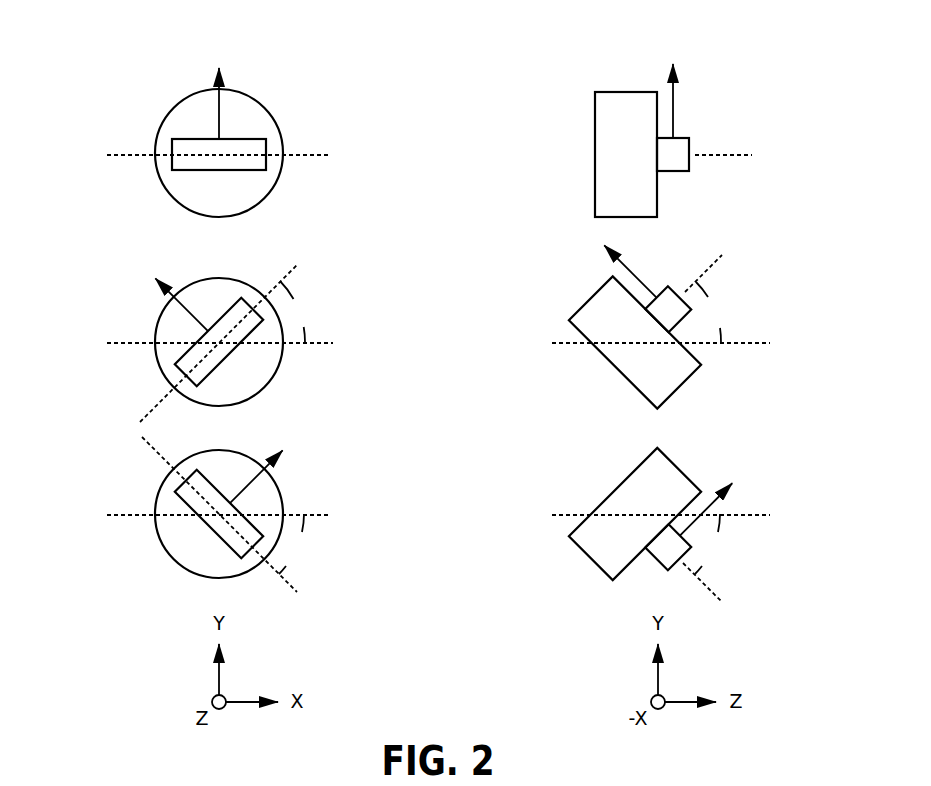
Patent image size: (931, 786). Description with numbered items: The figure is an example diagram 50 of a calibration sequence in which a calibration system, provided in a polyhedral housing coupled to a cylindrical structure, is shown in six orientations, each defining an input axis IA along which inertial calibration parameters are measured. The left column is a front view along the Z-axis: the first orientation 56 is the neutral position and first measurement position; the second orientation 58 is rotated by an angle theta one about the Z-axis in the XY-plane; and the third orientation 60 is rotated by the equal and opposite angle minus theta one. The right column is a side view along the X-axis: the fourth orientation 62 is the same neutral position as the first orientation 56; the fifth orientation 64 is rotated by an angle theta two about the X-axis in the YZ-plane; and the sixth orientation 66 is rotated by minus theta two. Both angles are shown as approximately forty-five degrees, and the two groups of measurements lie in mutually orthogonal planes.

The diagram 50 is at (93, 42).
The first orientation 56 is at (332, 106).
The second orientation 58 is at (334, 293).
The third orientation 60 is at (334, 481).
The fourth orientation 62 is at (756, 106).
The fifth orientation 64 is at (757, 295).
The sixth orientation 66 is at (757, 450).